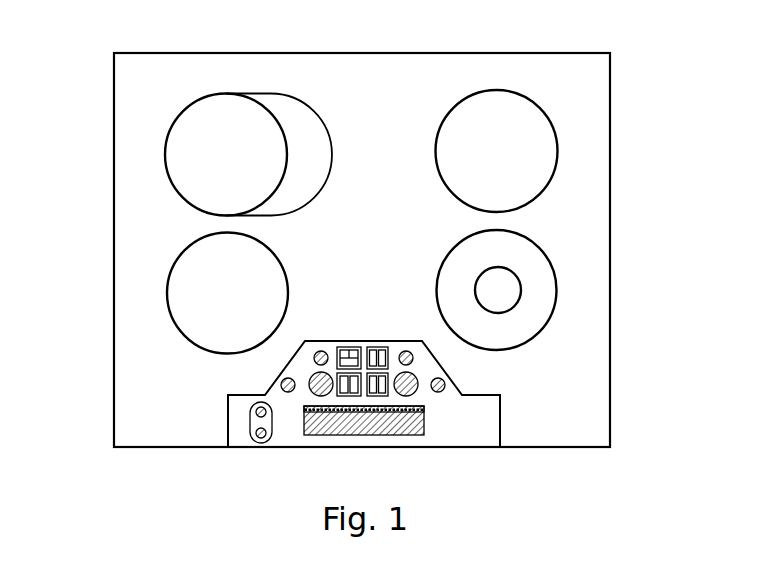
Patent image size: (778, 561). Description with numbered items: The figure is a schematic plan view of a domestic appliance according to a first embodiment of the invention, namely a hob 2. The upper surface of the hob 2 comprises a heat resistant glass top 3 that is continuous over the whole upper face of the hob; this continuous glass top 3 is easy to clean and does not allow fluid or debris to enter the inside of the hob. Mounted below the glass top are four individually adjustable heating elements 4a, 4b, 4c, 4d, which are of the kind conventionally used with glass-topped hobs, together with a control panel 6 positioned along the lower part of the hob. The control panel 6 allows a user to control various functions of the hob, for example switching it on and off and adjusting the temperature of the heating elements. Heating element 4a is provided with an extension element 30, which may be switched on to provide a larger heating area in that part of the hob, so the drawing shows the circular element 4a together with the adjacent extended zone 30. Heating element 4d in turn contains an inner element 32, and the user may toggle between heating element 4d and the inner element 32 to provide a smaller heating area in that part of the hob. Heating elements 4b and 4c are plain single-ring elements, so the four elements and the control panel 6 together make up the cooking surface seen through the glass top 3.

The hob 2 is at (418, 238).
The heat resistant glass top 3 is at (611, 80).
The heating element 4a is at (210, 94).
The heating element 4b is at (167, 293).
The heating element 4c is at (497, 90).
The heating element 4d is at (556, 314).
The extension element 30 is at (330, 132).
The inner element 32 is at (522, 290).
The control panel 6 is at (463, 433).